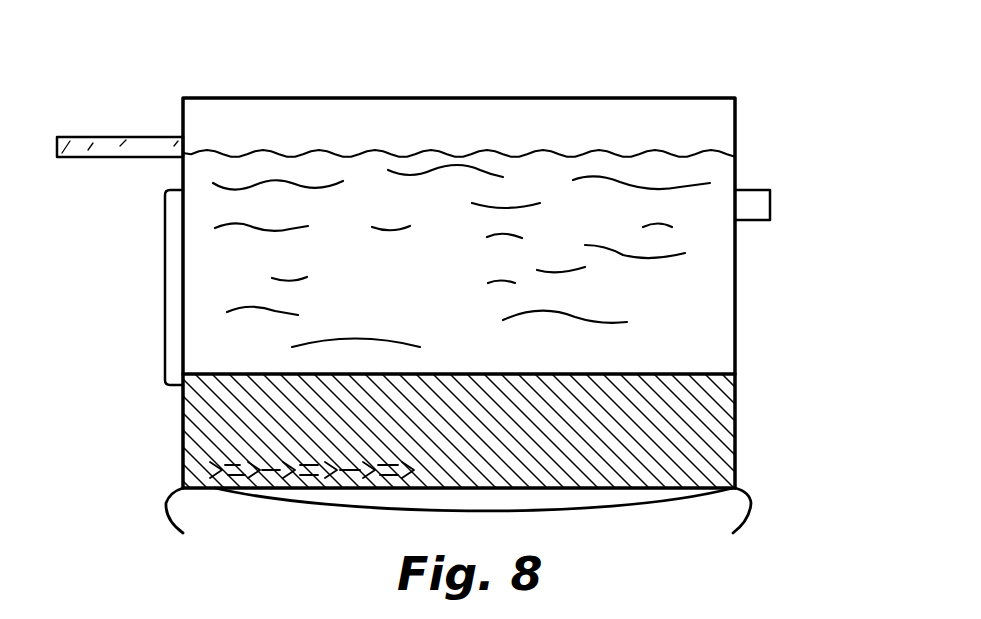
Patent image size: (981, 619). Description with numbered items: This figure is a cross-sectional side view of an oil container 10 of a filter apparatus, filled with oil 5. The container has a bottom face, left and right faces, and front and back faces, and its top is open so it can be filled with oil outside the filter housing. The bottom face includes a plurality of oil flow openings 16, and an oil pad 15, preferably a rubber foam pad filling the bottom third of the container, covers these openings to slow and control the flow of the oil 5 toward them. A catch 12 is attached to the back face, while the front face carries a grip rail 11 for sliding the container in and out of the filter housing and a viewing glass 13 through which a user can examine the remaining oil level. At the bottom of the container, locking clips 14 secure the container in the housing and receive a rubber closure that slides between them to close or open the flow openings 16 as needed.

The oil 5 is at (317, 167).
The oil container 10 is at (612, 99).
The grip rail 11 is at (120, 140).
The catch 12 is at (770, 187).
The viewing glass 13 is at (172, 297).
The locking clips 14 is at (163, 507).
The oil pad 15 is at (653, 432).
The oil flow openings 16 is at (318, 465).